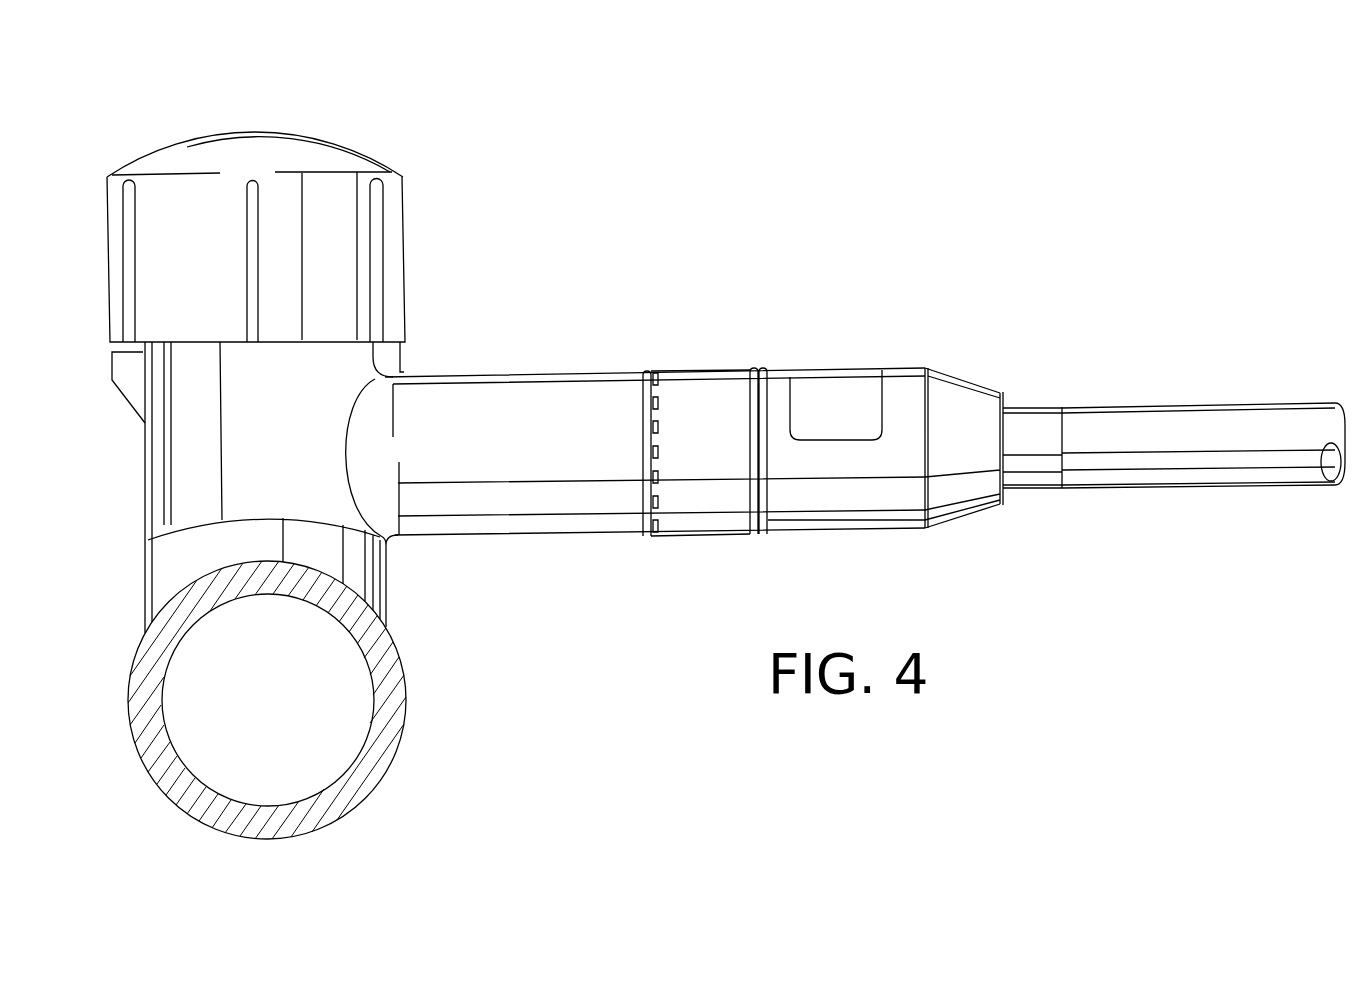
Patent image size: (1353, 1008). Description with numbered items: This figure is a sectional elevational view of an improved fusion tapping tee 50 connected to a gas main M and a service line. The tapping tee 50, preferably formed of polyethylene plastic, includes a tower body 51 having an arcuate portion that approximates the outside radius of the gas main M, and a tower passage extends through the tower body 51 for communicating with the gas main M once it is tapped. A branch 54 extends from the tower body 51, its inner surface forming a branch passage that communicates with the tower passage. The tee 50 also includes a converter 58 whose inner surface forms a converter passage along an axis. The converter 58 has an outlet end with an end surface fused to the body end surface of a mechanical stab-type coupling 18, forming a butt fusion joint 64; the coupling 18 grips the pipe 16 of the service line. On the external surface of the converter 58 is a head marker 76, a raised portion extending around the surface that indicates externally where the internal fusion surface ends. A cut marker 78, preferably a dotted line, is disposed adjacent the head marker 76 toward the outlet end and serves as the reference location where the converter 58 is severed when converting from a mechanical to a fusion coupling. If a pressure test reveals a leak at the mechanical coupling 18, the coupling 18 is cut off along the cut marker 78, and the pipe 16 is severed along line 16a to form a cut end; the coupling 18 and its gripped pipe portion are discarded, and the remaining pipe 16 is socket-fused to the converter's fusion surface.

The fusion tapping tee 50 is at (318, 132).
The tower body 51 is at (145, 453).
The gas main M is at (405, 733).
The branch 54 is at (512, 498).
The converter 58 is at (702, 363).
The head marker 76 is at (647, 375).
The cut marker 78 is at (657, 532).
The butt fusion joint 64 is at (763, 534).
The mechanical stab-type coupling 18 is at (868, 520).
The line 16a is at (1062, 408).
The pipe 16 is at (1223, 402).